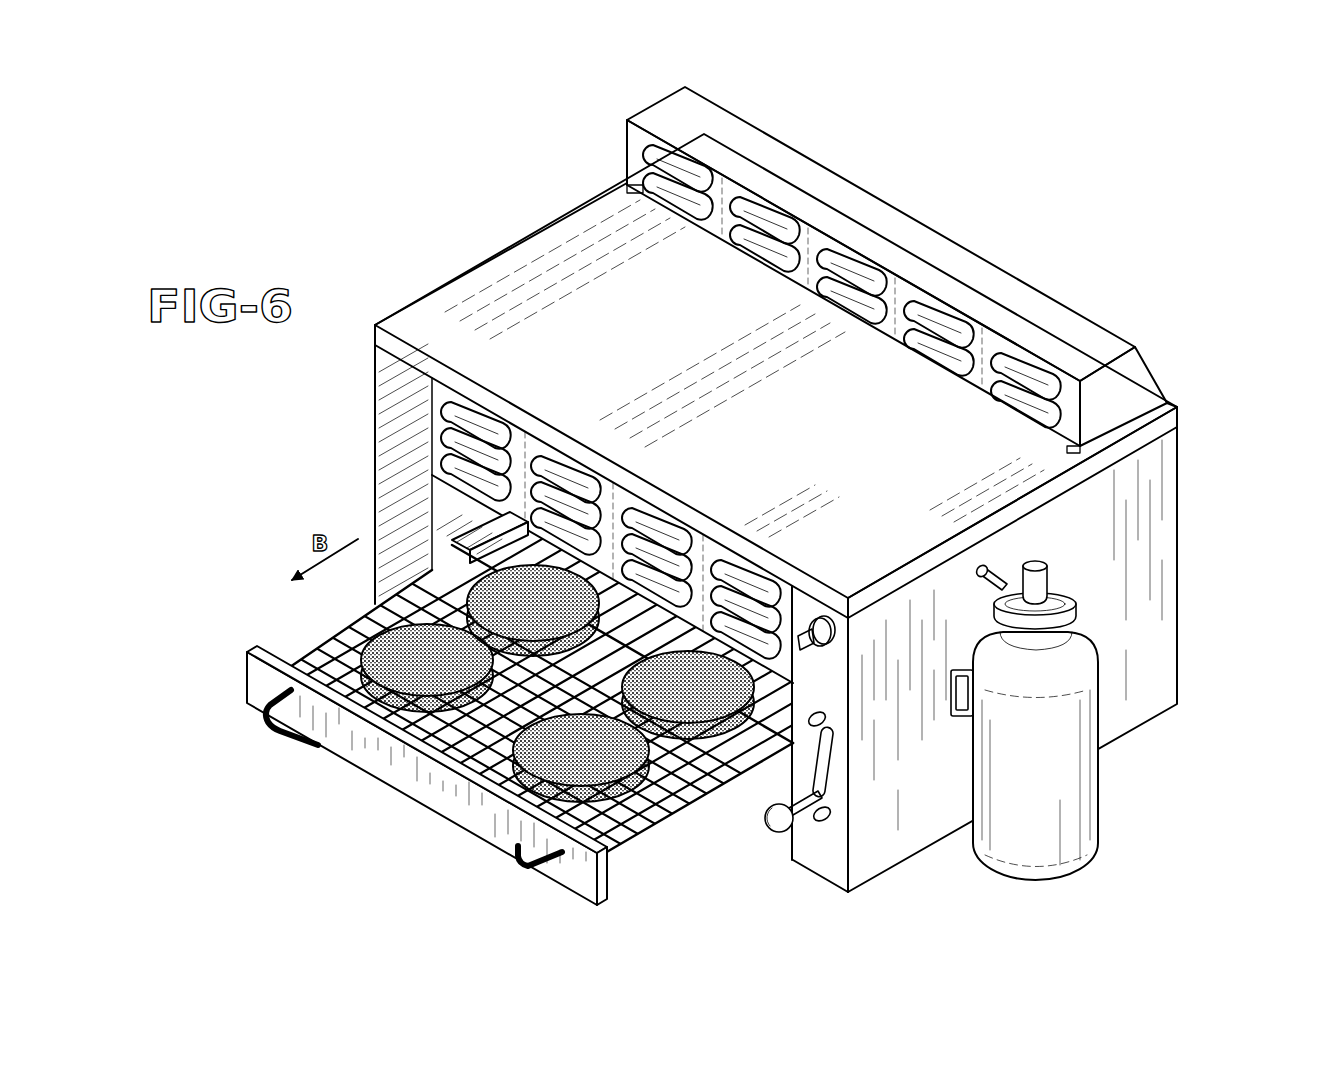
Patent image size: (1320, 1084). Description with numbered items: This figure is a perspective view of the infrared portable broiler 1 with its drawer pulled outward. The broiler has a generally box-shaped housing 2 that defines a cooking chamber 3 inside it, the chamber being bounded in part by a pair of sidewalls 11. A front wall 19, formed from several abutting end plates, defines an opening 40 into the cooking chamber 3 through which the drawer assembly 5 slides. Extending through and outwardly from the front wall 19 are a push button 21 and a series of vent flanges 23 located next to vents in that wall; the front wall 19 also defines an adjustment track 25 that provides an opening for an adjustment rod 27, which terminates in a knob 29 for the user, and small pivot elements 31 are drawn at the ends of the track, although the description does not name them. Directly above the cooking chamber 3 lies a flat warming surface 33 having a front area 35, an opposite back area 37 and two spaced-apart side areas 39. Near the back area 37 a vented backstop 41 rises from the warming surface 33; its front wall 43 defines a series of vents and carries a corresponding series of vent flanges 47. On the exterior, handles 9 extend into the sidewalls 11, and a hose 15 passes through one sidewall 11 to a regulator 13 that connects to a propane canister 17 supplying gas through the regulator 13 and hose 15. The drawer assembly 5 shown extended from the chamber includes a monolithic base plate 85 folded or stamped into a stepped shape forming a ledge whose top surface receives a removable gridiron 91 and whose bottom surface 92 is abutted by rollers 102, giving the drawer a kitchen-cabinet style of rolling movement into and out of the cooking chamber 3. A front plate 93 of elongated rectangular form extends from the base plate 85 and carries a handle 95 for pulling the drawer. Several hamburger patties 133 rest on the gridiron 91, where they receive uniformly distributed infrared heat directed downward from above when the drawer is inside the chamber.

The infrared portable broiler 1 is at (370, 170).
The housing 2 is at (488, 248).
The cooking chamber 3 is at (445, 502).
The opening 40 is at (615, 627).
The drawer assembly 5 is at (250, 683).
The handles 9 is at (953, 688).
The sidewalls 11 is at (1147, 640).
The regulator 13 is at (1070, 590).
The hose 15 is at (1000, 566).
The propane canister 17 is at (1088, 786).
The front wall 19 is at (383, 455).
The push button 21 is at (812, 645).
The vent flanges 23 is at (487, 430).
The adjustment track 25 is at (835, 765).
The adjustment rod 27 is at (816, 800).
The knob 29 is at (778, 825).
The pivots 31 is at (826, 722).
The warming surface 33 is at (686, 349).
The front area 35 is at (487, 368).
The back area 37 is at (825, 330).
The side areas 39 is at (540, 238).
The vented backstop 41 is at (843, 190).
The front wall of backstop 43 is at (898, 325).
The vent flanges 47 is at (673, 162).
The base plate 85 is at (340, 622).
The gridiron 91 is at (482, 730).
The front plate 93 is at (417, 774).
The bottom surface 92 is at (650, 843).
The handle 95 is at (293, 738).
The rollers 102 is at (783, 792).
The hamburger patties 133 is at (480, 630).